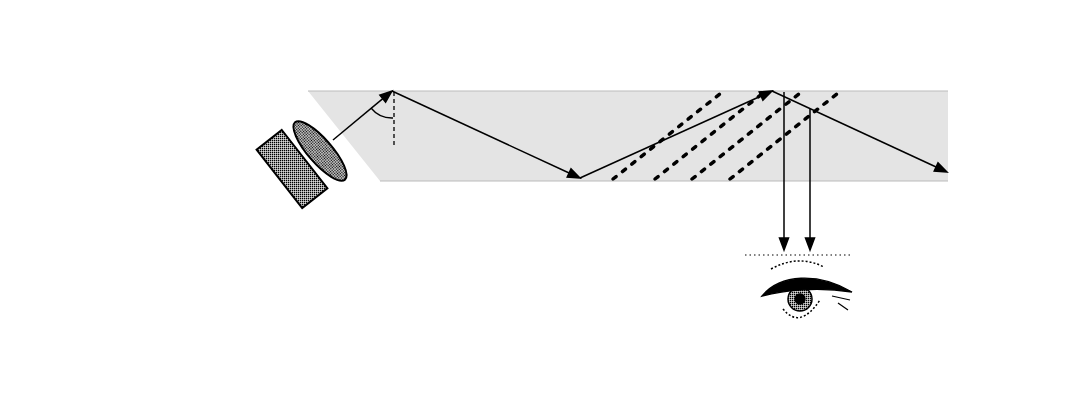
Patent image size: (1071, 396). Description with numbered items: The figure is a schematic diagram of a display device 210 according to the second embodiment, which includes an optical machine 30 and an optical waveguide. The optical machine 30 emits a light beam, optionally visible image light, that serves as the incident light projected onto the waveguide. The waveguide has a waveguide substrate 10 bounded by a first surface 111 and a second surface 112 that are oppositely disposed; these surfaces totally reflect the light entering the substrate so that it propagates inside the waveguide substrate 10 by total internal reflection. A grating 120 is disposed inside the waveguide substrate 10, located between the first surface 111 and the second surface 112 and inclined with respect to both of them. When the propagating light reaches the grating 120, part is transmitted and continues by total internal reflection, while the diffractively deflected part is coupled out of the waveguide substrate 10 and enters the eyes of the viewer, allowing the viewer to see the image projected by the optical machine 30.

The display device 210 is at (110, 68).
The optical machine 30 is at (318, 198).
The waveguide substrate 10 is at (628, 142).
The first surface 111 is at (517, 91).
The second surface 112 is at (555, 183).
The grating 120 is at (652, 172).